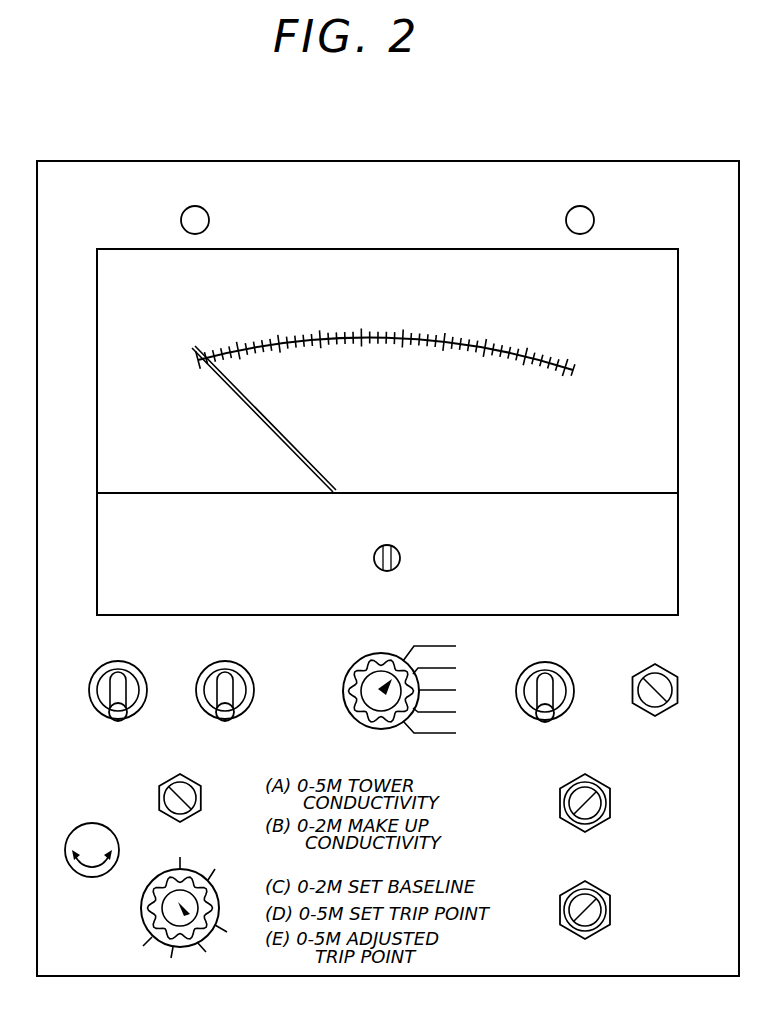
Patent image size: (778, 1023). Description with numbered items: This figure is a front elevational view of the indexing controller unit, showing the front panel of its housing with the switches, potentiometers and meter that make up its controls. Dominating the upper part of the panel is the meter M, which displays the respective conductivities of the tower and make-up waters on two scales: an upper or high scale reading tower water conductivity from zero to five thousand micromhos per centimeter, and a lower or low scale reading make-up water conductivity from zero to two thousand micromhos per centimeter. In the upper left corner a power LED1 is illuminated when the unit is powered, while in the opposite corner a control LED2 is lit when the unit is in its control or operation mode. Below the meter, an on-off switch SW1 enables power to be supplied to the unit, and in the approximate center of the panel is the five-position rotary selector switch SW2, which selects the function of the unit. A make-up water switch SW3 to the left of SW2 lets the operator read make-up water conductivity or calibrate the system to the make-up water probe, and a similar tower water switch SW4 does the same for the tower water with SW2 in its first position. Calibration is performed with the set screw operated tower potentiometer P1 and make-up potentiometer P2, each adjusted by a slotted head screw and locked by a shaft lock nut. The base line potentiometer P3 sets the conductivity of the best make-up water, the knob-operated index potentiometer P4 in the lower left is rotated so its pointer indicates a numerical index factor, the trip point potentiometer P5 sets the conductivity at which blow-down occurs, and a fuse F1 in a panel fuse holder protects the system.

The meter M is at (388, 289).
The power LED LED1 is at (209, 220).
The control LED LED2 is at (594, 220).
The on-off switch SW1 is at (109, 713).
The rotary selector switch SW2 is at (365, 688).
The make-up water switch SW3 is at (235, 712).
The tower water switch SW4 is at (555, 713).
The tower calibrate/adjustment potentiometer P1 is at (590, 823).
The make-up calibrate/adjustment potentiometer P2 is at (589, 891).
The base line adjustment potentiometer P3 is at (198, 797).
The index potentiometer P4 is at (161, 897).
The trip point adjustment potentiometer P5 is at (671, 691).
The fuse F1 is at (115, 838).